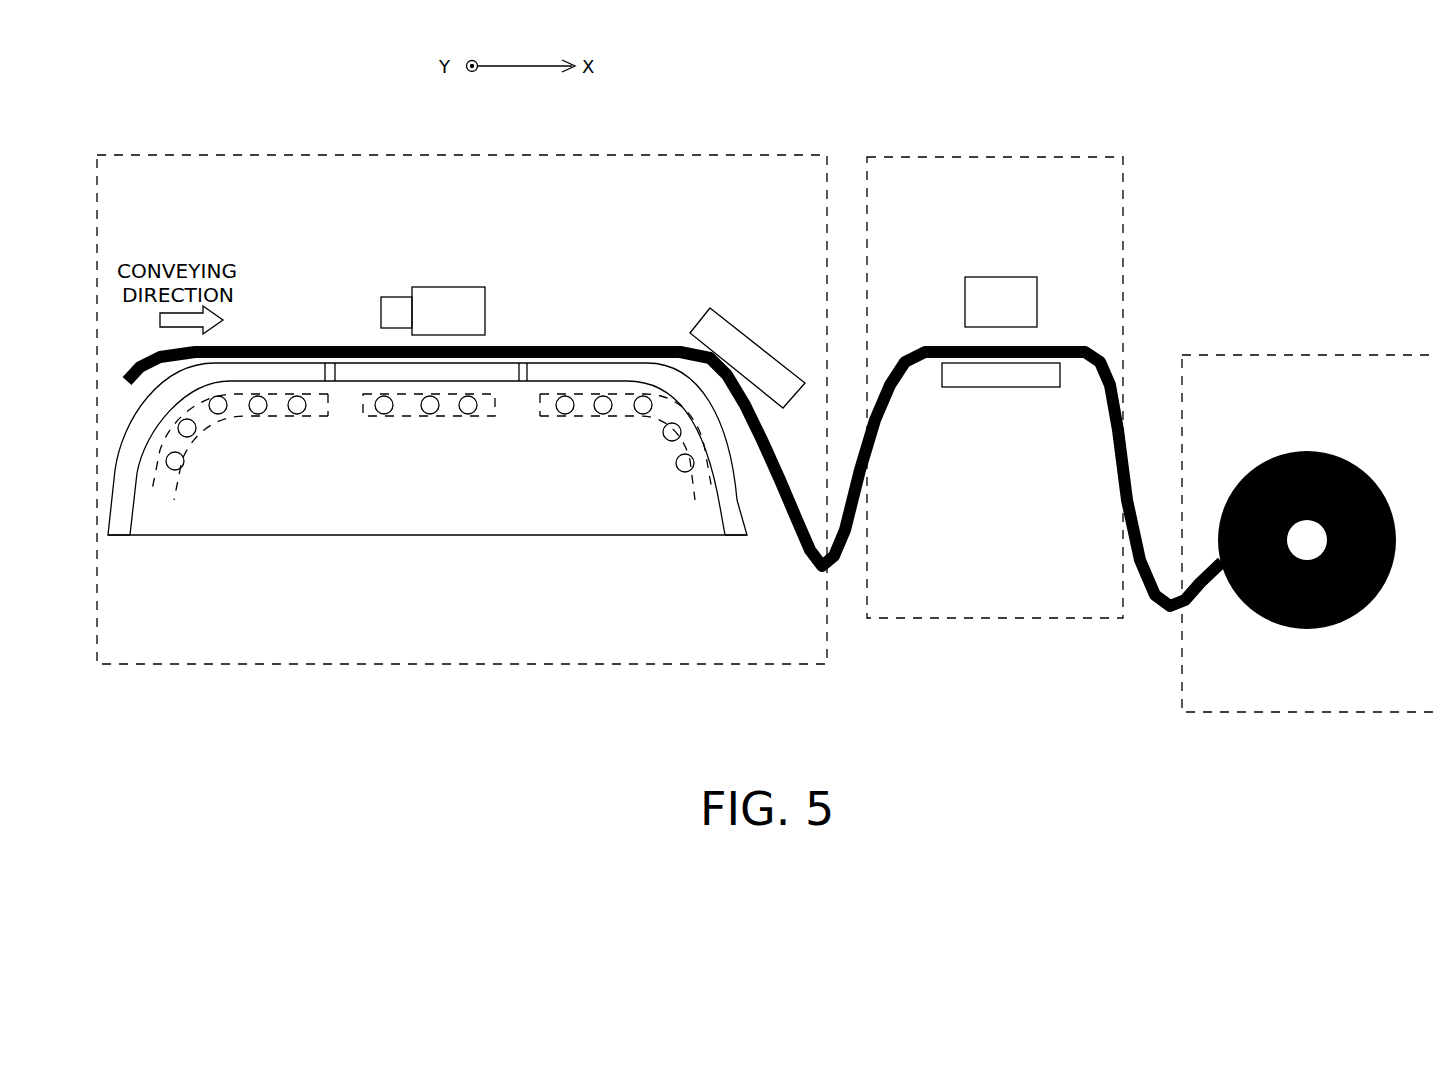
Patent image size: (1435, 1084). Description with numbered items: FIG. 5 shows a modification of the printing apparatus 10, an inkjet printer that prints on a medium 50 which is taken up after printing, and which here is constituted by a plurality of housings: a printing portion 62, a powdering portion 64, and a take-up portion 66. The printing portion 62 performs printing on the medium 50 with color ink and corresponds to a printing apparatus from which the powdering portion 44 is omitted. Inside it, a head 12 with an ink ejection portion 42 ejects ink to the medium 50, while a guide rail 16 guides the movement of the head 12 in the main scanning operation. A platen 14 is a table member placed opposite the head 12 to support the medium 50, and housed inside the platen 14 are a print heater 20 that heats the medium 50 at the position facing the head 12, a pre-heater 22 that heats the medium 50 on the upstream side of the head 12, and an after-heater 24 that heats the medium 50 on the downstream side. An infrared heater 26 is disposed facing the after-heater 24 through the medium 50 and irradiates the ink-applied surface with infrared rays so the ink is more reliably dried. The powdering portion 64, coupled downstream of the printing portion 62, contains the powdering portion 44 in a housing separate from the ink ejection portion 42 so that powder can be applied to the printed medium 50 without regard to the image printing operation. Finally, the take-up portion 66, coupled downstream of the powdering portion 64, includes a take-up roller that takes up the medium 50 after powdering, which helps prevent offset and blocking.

The printing apparatus 10 is at (180, 63).
The head 12 is at (448, 259).
The platen 14 is at (508, 390).
The guide rail 16 is at (394, 297).
The print heater 20 is at (374, 415).
The pre-heater 22 is at (178, 480).
The after-heater 24 is at (693, 487).
The infrared heater 26 is at (730, 316).
The ink ejection portion 42 is at (441, 287).
The powdering portion 44 is at (1006, 277).
The medium 50 is at (265, 348).
The printing portion 62 is at (749, 156).
The powdering portion 64 is at (975, 158).
The take-up portion 66 is at (1305, 356).